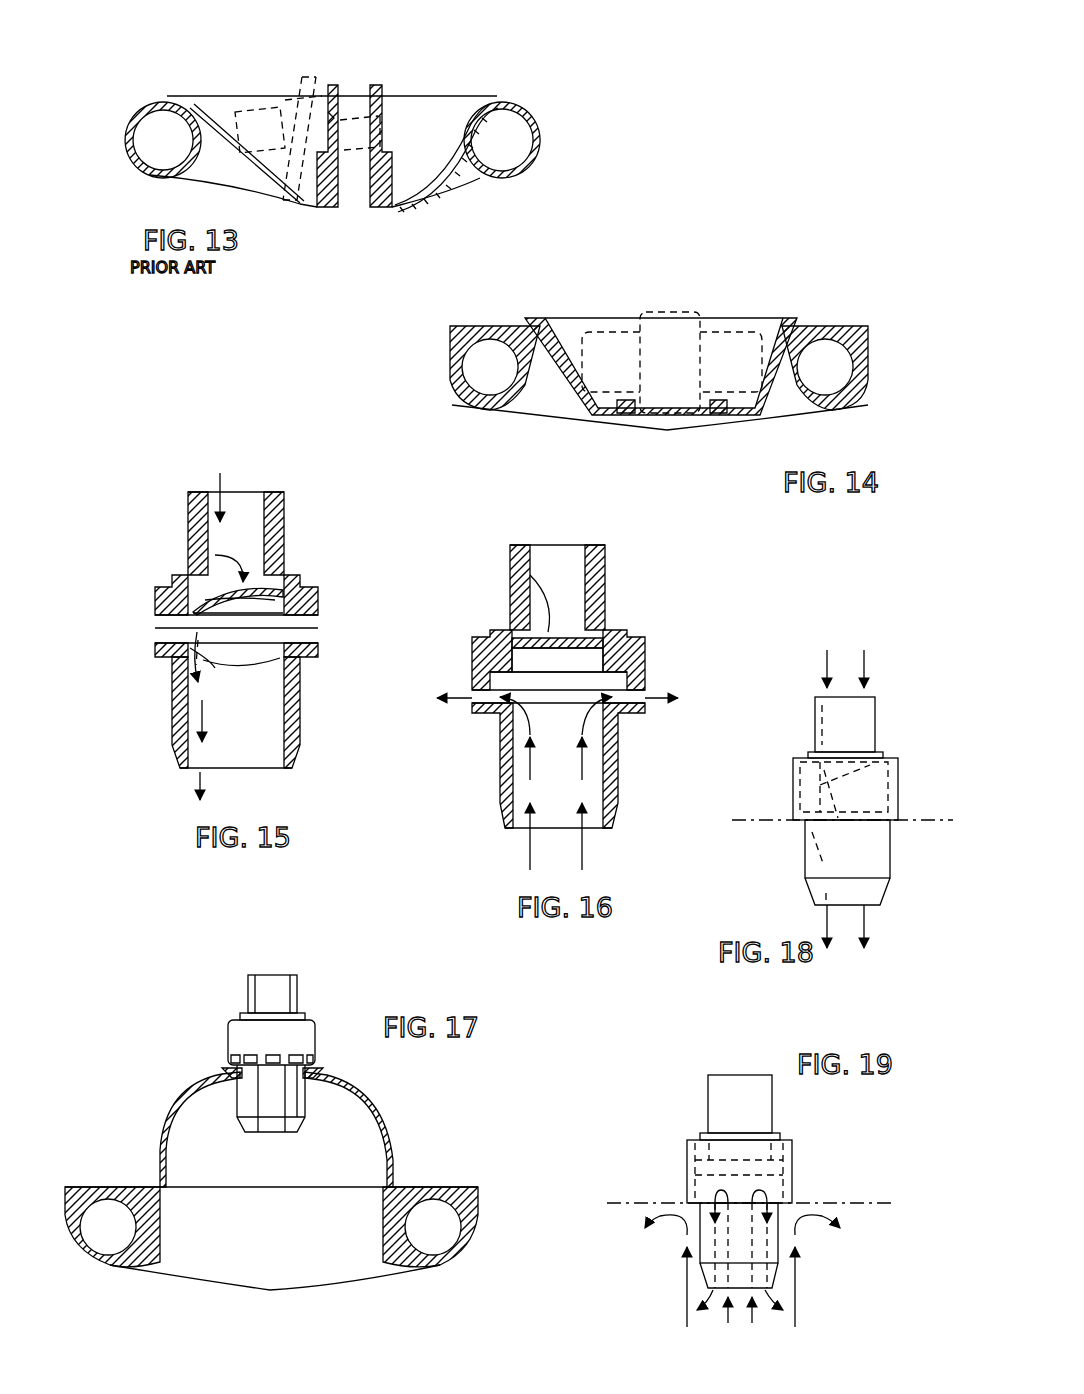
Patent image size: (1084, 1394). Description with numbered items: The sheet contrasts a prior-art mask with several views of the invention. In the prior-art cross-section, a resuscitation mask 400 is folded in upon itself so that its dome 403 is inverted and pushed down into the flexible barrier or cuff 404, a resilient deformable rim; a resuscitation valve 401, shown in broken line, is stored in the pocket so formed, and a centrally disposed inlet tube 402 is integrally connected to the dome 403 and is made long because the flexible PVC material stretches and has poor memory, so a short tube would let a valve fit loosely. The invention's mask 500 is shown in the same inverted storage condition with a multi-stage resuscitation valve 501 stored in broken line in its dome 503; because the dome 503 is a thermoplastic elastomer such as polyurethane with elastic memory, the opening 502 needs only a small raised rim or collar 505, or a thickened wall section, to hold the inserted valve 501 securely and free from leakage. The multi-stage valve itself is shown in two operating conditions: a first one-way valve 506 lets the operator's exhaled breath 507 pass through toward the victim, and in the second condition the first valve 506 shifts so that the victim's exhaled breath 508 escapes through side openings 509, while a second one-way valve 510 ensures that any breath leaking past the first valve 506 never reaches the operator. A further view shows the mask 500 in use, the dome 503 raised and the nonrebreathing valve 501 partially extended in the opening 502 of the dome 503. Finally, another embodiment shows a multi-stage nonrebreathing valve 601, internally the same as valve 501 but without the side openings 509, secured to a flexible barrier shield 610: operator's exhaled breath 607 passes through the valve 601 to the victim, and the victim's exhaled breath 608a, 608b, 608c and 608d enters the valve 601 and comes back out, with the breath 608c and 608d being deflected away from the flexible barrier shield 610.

In FIG. 13, the resuscitation mask 400 is at (486, 66).
In FIG. 13, the resuscitation valve 401 is at (292, 75).
In FIG. 13, the inlet tube 402 is at (378, 98).
In FIG. 13, the dome 403 is at (440, 190).
In FIG. 13, the flexible barrier or cuff 404 is at (540, 130).
In FIG. 14, the resuscitation mask 500 is at (793, 278).
In FIG. 17, the resuscitation mask 500 is at (425, 1150).
In FIG. 14, the multi-stage resuscitation valve 501 is at (670, 312).
In FIG. 15, the multi-stage resuscitation valve 501 is at (290, 548).
In FIG. 16, the multi-stage resuscitation valve 501 is at (615, 600).
In FIG. 17, the multi-stage resuscitation valve 501 is at (305, 1028).
In FIG. 14, the opening 502 is at (700, 413).
In FIG. 17, the opening 502 is at (250, 1117).
In FIG. 14, the dome 503 is at (765, 395).
In FIG. 17, the dome 503 is at (373, 1113).
In FIG. 14, the raised rim or collar 505 is at (625, 400).
In FIG. 17, the raised rim or collar 505 is at (323, 1067).
In FIG. 15, the first one-way valve 506 is at (222, 633).
In FIG. 16, the first one-way valve 506 is at (547, 680).
In FIG. 15, the exhaled breath 507 is at (220, 480).
In FIG. 16, the exhaled breath 508 is at (530, 852).
In FIG. 15, the side openings 509 is at (155, 625).
In FIG. 16, the side openings 509 is at (472, 698).
In FIG. 17, the side openings 509 is at (230, 1059).
In FIG. 15, the second one-way valve 510 is at (235, 545).
In FIG. 16, the second one-way valve 510 is at (533, 600).
In FIG. 18, the multi-stage nonrebreathing resuscitation valve 601 is at (888, 722).
In FIG. 19, the multi-stage nonrebreathing resuscitation valve 601 is at (680, 1113).
In FIG. 18, the exhaled breath 607 is at (827, 665).
In FIG. 19, the exhaled breath 608a is at (728, 1318).
In FIG. 19, the exhaled breath 608b is at (752, 1322).
In FIG. 19, the exhaled breath 608c is at (687, 1310).
In FIG. 19, the exhaled breath 608d is at (795, 1293).
In FIG. 18, the flexible barrier shield 610 is at (920, 820).
In FIG. 19, the flexible barrier shield 610 is at (828, 1203).